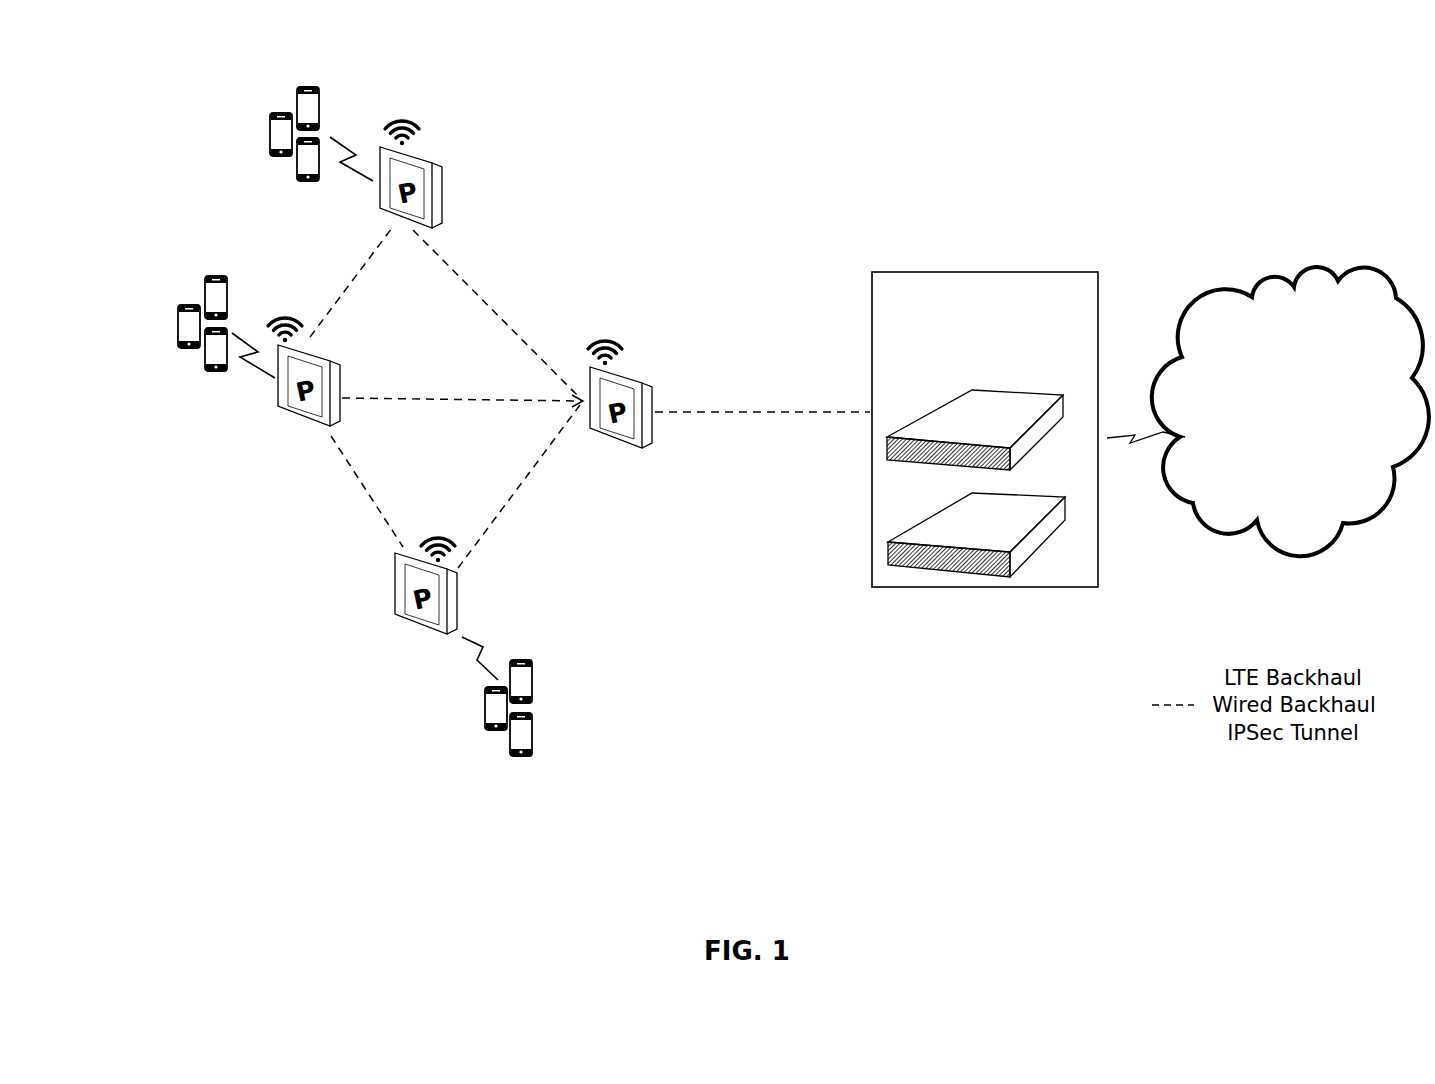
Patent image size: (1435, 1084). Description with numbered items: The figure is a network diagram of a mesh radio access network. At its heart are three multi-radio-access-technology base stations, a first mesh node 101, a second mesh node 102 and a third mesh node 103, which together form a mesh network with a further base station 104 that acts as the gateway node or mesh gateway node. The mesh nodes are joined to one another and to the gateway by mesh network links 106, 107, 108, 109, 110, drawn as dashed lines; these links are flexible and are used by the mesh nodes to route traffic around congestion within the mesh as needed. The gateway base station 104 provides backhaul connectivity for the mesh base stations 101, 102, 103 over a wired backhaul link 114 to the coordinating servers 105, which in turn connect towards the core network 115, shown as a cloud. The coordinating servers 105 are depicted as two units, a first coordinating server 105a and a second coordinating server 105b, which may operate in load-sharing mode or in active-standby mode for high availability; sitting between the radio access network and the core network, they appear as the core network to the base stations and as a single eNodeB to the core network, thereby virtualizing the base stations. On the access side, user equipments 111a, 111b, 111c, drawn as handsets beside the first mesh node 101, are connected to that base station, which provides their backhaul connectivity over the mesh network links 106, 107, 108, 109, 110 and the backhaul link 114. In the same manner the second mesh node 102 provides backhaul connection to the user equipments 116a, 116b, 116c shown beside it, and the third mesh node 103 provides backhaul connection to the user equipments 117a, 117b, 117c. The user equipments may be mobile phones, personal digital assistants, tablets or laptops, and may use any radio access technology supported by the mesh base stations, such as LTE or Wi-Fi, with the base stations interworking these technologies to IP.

The mesh node 1 101 is at (428, 158).
The mesh node 2 102 is at (277, 415).
The mesh node 3 103 is at (407, 633).
The base station 104 is at (637, 373).
The coordinating servers 105 is at (955, 270).
The coordinating server 105a is at (1042, 390).
The coordinating server 105b is at (1042, 493).
The mesh network link 106 is at (347, 300).
The mesh network link 107 is at (512, 320).
The mesh network link 108 is at (357, 487).
The mesh network link 109 is at (533, 480).
The mesh network link 110 is at (458, 393).
The user equipment 111a is at (268, 120).
The user equipment 111b is at (295, 180).
The user equipment 111c is at (320, 108).
The backhaul link 114 is at (782, 420).
The core network 115 is at (1293, 260).
The 4G UE 116a is at (177, 328).
The 3G UE 116b is at (213, 275).
The 3G UE 116c is at (202, 355).
The Wi-Fi UE 117a is at (482, 702).
The 3G UE 117b is at (523, 760).
The 4G UE 117c is at (520, 657).